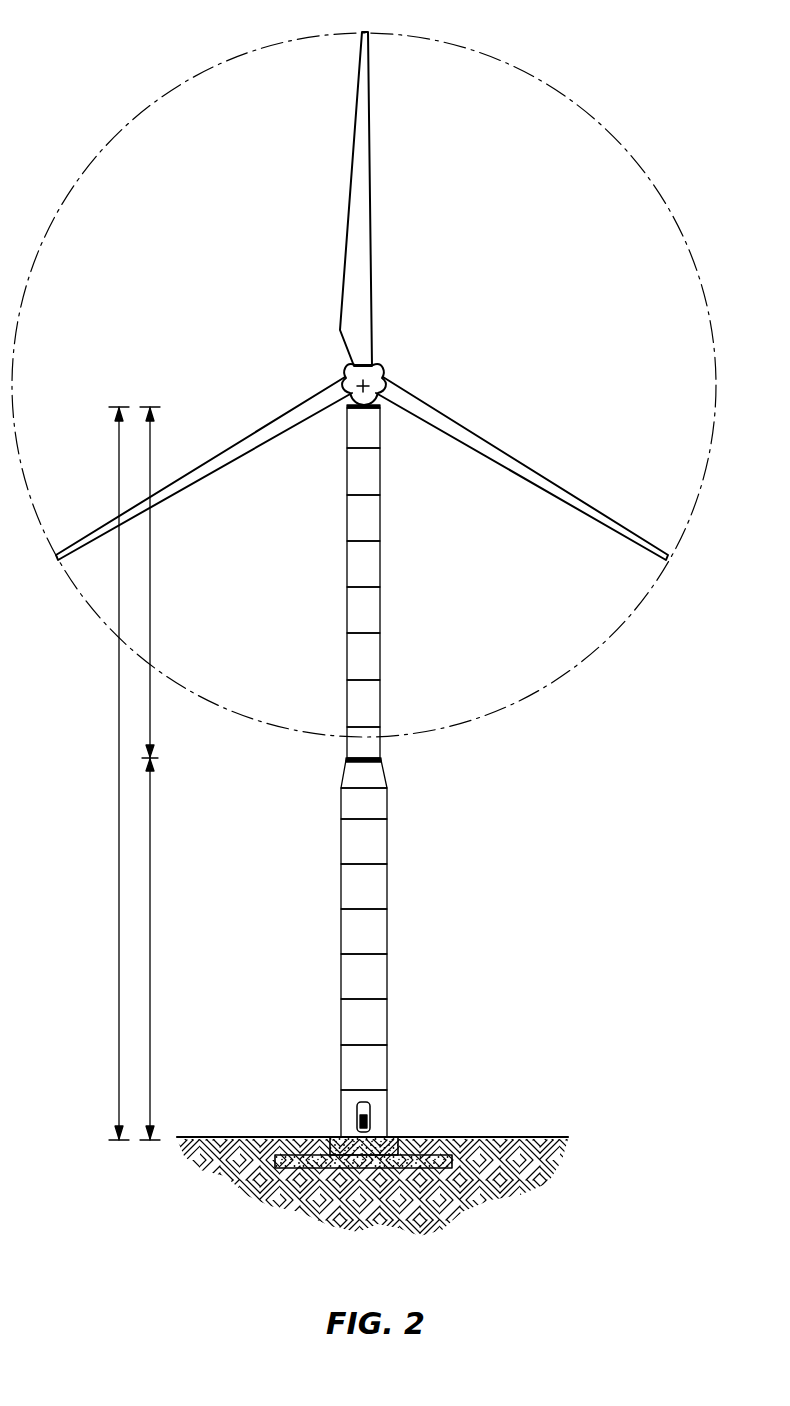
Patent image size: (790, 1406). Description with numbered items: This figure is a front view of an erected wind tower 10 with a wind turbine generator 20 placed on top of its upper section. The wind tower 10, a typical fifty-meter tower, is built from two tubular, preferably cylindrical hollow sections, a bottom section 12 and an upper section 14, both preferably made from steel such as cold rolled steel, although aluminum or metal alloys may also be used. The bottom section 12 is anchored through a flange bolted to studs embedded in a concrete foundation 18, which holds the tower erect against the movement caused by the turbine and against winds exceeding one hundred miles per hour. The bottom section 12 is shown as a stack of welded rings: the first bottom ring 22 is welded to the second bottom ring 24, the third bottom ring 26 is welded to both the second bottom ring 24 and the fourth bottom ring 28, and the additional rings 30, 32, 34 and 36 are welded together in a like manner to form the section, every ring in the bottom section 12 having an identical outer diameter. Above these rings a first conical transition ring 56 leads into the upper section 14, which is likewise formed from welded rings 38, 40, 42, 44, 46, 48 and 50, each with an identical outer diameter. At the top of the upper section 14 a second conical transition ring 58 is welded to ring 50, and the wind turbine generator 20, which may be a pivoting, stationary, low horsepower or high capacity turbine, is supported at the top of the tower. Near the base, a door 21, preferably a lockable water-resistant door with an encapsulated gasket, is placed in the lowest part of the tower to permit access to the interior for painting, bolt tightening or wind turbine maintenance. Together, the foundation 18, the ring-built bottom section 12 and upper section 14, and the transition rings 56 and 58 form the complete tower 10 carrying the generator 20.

The wind tower 10 is at (119, 842).
The bottom section 12 is at (150, 920).
The upper section 14 is at (150, 553).
The concrete foundation 18 is at (328, 1148).
The wind turbine generator 20 is at (383, 370).
The door 21 is at (357, 1108).
The first bottom ring 22 is at (388, 1112).
The second bottom ring 24 is at (388, 1067).
The third bottom ring 26 is at (388, 1022).
The fourth bottom ring 28 is at (388, 977).
The additional ring 30 is at (388, 932).
The additional ring 32 is at (388, 887).
The additional ring 34 is at (388, 842).
The additional ring 36 is at (388, 804).
The bottom ring of upper section 38 is at (381, 741).
The upper section ring 40 is at (381, 702).
The upper section ring 42 is at (381, 664).
The upper section ring 44 is at (381, 609).
The upper section ring 46 is at (381, 563).
The upper section ring 48 is at (381, 517).
The upper section ring 50 is at (381, 472).
The first conical transition ring 56 is at (342, 776).
The second conical transition ring 58 is at (346, 428).